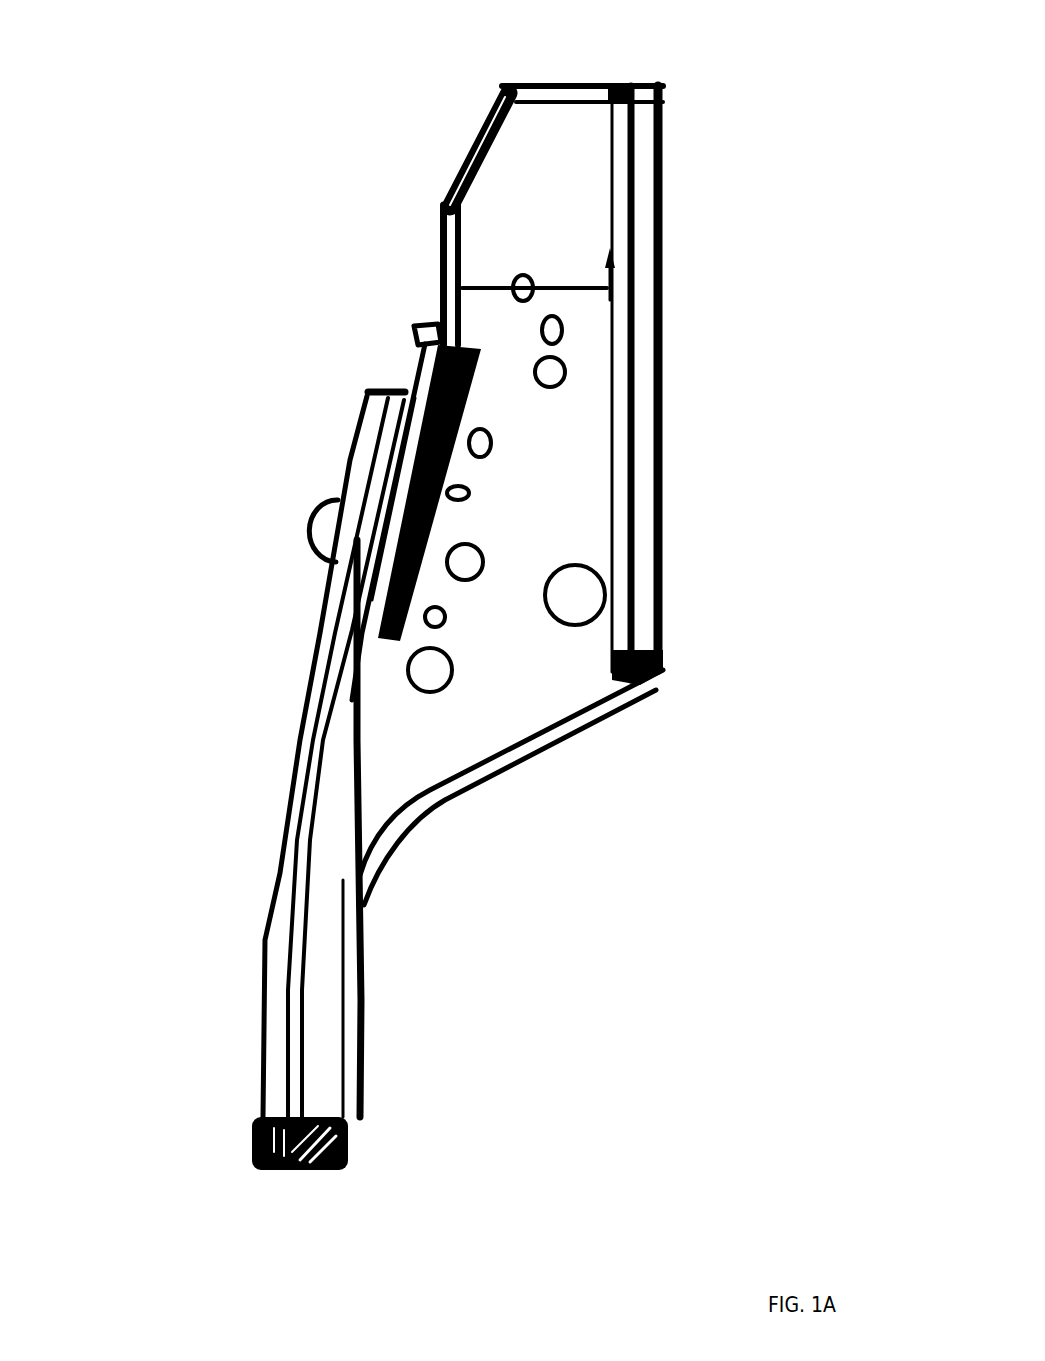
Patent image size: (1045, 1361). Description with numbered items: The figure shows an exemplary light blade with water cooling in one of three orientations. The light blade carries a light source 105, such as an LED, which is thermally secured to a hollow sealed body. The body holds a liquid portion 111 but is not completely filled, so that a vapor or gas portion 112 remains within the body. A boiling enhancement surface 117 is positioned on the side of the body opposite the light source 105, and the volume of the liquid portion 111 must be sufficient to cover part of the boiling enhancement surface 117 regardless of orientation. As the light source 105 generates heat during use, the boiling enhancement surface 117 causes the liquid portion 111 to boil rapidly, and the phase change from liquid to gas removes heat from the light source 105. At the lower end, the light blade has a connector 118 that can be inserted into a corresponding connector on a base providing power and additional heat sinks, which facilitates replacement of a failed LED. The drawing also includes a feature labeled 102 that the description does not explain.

The vapor or gas portion 112 is at (537, 218).
The liquid portion 111 is at (512, 312).
The light source 105 is at (300, 498).
The boiling enhancement surface 117 is at (367, 613).
The mounting hole 102 is at (568, 600).
The connector 118 is at (296, 1183).